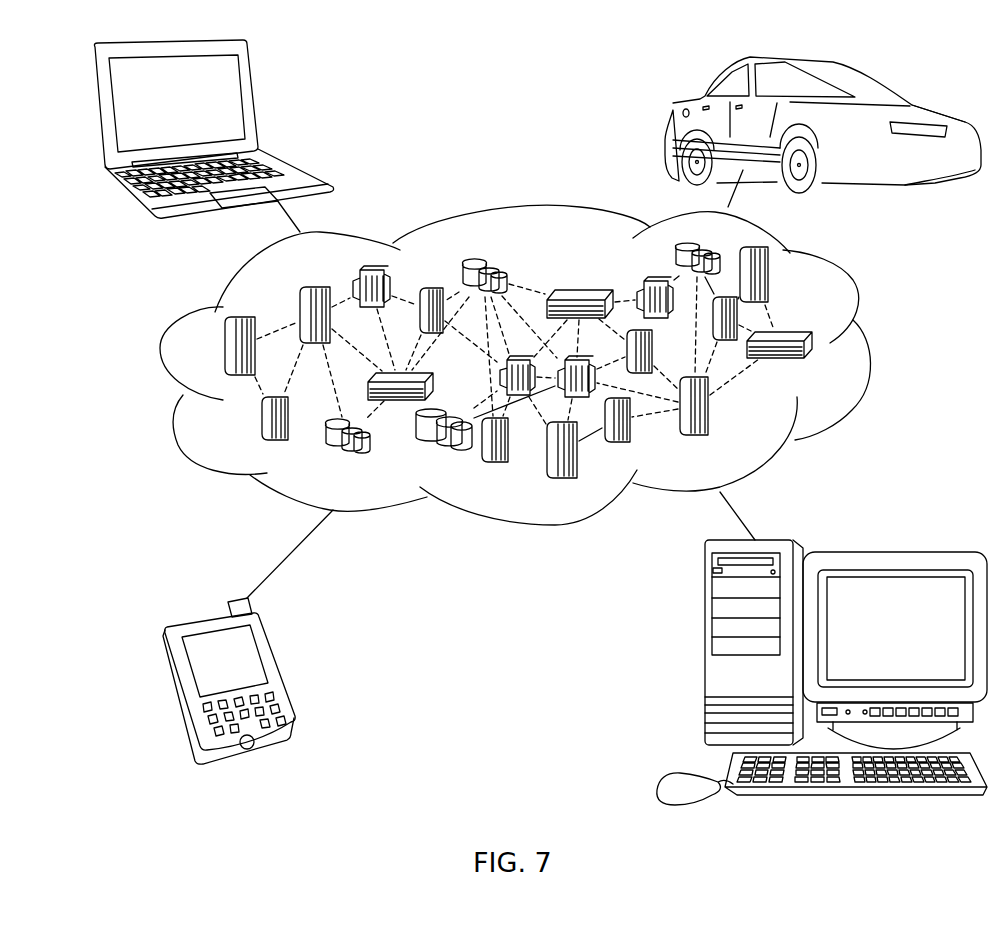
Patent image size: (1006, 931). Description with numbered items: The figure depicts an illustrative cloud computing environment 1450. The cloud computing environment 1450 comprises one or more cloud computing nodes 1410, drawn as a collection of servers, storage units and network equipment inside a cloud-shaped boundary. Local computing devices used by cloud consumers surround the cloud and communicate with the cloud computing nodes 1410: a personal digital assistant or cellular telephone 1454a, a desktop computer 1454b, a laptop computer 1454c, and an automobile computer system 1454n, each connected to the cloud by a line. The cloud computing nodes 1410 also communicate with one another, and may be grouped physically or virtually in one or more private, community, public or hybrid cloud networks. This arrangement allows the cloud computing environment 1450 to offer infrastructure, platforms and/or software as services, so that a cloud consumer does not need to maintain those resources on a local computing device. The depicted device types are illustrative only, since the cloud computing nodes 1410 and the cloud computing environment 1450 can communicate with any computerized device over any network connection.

The laptop computer 1454c is at (257, 97).
The automobile computer system 1454n is at (682, 103).
The cloud computing environment 1450 is at (857, 288).
The cloud computing nodes 1410 is at (830, 365).
The personal digital assistant or cellular telephone 1454a is at (277, 663).
The desktop computer 1454b is at (705, 657).